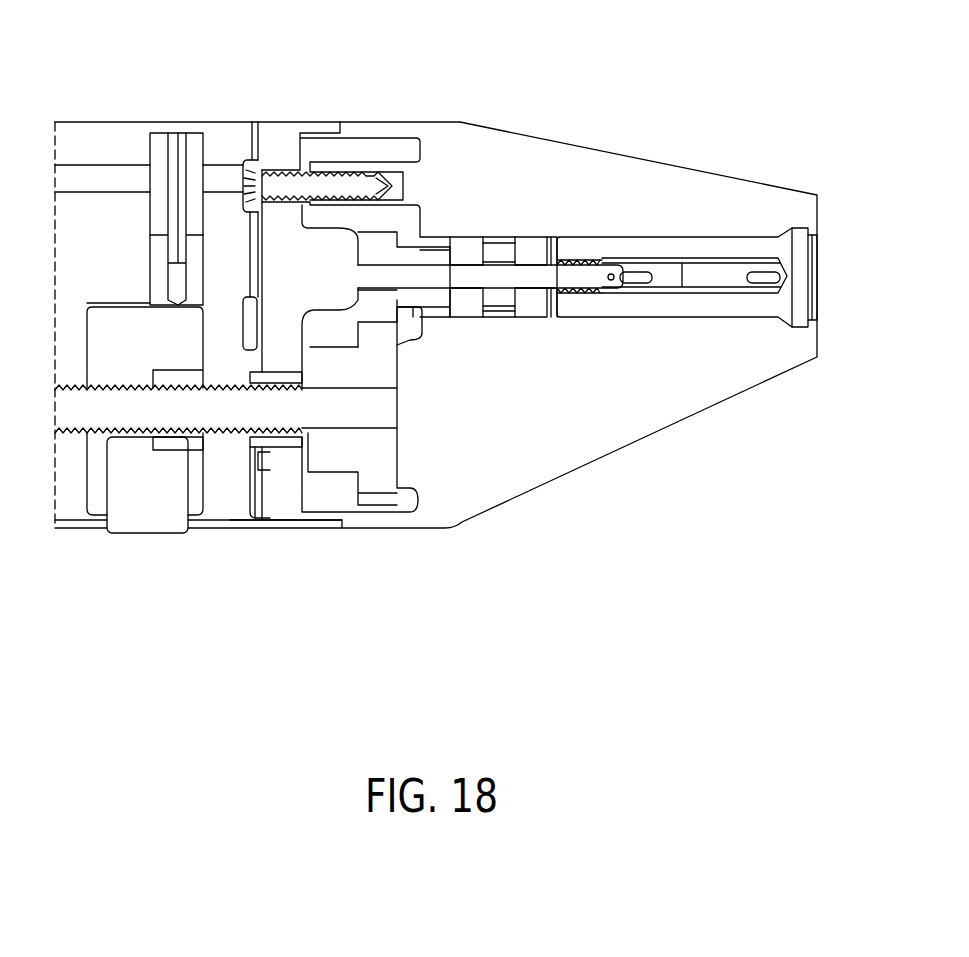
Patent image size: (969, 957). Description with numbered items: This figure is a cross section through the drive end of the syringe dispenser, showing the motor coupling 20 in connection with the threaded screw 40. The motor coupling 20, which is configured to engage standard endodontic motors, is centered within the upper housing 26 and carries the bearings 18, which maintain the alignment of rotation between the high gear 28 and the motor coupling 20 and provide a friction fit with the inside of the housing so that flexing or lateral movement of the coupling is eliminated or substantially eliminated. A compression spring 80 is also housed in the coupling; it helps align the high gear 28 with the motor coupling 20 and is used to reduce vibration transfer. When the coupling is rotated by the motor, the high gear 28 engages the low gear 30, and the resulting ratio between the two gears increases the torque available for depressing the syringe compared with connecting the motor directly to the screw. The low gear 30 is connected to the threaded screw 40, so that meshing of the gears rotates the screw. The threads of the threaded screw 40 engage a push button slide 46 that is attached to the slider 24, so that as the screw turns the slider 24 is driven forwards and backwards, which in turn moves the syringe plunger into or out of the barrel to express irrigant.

The bearings 18 is at (535, 243).
The motor coupling 20 is at (743, 247).
The slider 24 is at (157, 147).
The upper housing 26 is at (702, 385).
The high gear 28 is at (390, 343).
The low gear 30 is at (357, 365).
The threaded screw 40 is at (240, 417).
The push button slide 46 is at (153, 513).
The compression spring 80 is at (573, 260).